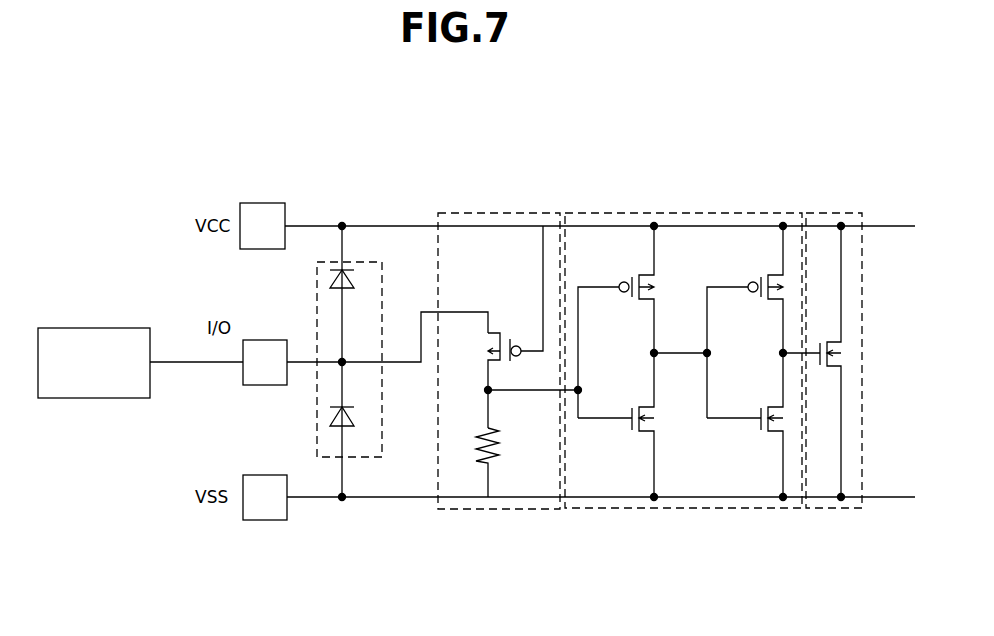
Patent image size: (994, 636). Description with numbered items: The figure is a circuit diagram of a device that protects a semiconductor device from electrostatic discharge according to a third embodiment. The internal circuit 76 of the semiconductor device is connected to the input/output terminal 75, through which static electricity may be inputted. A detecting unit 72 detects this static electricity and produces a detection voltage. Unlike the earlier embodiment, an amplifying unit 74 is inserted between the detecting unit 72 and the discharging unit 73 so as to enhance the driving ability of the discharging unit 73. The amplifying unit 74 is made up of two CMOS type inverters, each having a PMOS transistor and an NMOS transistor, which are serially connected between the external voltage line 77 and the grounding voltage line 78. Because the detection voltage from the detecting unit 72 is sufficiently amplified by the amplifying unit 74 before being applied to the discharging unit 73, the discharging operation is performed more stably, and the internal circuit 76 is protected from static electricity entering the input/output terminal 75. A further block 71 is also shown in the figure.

The diode clamp circuit (D6, D7) 71 is at (360, 262).
The detecting unit 72 is at (470, 213).
The discharging unit 73 is at (817, 213).
The amplifying unit 74 is at (697, 213).
The input/output terminal 75 is at (255, 385).
The internal circuit 76 is at (118, 398).
The external voltage line 77 is at (315, 225).
The grounding voltage line 78 is at (310, 498).